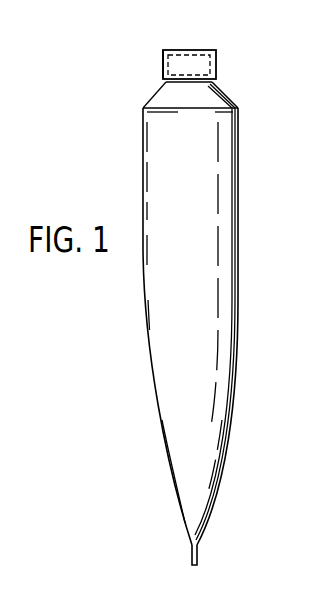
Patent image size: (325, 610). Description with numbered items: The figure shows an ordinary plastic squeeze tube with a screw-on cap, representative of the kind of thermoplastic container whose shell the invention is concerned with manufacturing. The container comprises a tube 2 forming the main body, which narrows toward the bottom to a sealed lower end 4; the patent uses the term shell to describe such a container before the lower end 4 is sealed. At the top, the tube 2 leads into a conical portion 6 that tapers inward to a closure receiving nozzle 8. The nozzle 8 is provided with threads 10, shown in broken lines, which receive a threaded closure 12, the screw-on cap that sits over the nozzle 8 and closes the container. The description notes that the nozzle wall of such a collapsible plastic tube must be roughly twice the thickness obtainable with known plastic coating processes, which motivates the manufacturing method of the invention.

The tube 2 is at (230, 268).
The sealed lower end 4 is at (197, 555).
The conical portion 6 is at (222, 92).
The closure receiving nozzle 8 is at (190, 53).
The threads 10 is at (213, 67).
The threaded closure 12 is at (163, 65).